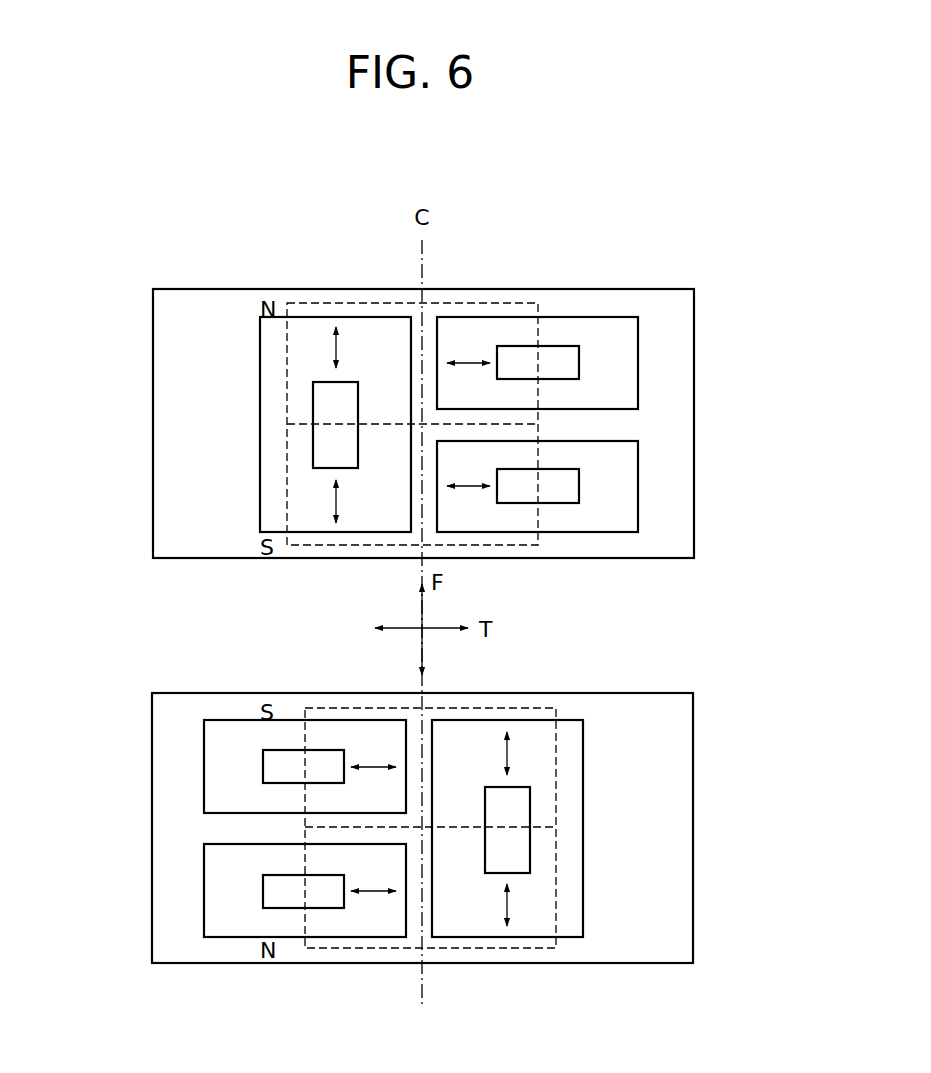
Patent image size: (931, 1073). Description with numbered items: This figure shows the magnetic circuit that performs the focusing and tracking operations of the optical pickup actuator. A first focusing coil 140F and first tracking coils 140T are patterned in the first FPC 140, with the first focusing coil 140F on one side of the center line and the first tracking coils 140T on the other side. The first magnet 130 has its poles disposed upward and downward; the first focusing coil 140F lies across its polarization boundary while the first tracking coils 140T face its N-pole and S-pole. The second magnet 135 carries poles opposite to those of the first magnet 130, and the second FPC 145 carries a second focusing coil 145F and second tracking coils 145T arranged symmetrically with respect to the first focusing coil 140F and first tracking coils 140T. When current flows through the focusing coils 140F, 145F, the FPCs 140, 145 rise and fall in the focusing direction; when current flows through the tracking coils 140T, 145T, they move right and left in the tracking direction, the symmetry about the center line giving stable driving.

The first magnet 130 is at (342, 707).
The second magnet 135 is at (338, 302).
The first FPC 140 is at (682, 906).
The first focusing coil 140F is at (575, 794).
The first tracking coils 140T is at (213, 885).
The second FPC 145 is at (605, 289).
The second focusing coil 145F is at (273, 413).
The second tracking coils 145T is at (628, 468).